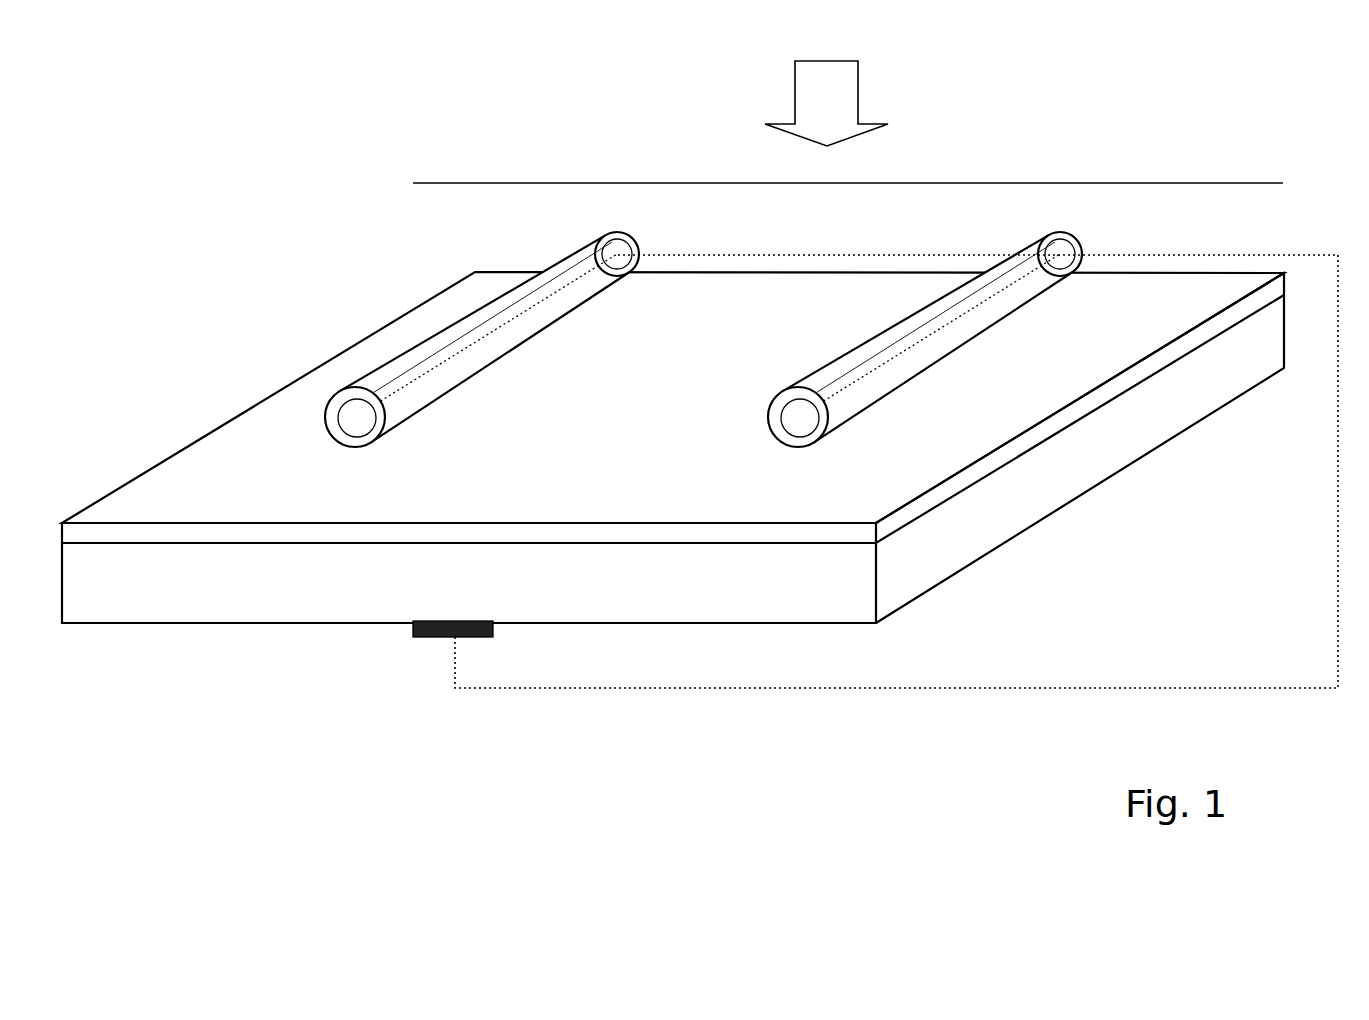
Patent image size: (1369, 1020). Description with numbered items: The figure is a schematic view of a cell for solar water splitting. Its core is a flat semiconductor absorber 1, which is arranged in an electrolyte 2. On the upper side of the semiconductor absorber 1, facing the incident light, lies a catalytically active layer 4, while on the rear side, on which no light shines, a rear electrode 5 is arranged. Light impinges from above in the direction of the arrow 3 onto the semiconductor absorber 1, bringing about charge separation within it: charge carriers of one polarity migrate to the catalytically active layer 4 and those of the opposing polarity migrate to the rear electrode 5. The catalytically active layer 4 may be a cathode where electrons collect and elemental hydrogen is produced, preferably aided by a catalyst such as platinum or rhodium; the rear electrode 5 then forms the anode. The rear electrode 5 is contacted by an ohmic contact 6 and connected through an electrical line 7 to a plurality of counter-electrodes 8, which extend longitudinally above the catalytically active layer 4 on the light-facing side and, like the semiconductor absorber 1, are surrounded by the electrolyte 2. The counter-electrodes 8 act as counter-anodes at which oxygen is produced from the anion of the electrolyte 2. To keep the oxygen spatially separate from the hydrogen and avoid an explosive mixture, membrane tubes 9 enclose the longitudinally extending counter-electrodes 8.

The semiconductor absorber 1 is at (1046, 505).
The electrolyte 2 is at (1112, 202).
The arrow 3 is at (858, 80).
The catalytically active layer 4 is at (258, 432).
The rear electrode 5 is at (221, 643).
The ohmic contact 6 is at (430, 640).
The electrical line 7 is at (833, 690).
The counter-electrodes 8 is at (482, 317).
The membrane tubes 9 is at (390, 360).